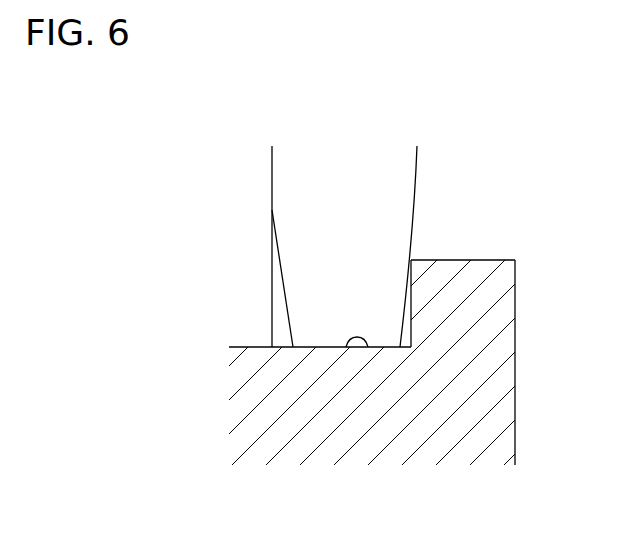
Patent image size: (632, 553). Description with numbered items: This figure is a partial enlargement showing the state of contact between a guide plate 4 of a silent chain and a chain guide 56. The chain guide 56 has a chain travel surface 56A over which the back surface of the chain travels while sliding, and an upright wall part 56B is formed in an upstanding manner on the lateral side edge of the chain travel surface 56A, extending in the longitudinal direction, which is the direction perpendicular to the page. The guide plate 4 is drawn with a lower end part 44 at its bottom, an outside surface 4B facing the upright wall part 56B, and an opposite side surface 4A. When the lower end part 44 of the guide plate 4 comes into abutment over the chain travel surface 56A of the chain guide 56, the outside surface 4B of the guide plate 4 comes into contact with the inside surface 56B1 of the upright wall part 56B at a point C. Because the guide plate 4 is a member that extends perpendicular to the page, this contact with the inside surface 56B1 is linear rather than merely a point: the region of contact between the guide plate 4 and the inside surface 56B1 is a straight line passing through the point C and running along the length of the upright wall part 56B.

The guide plate 4 is at (420, 160).
The tapered side surface of tool 4A is at (283, 313).
The outside surface 4B is at (400, 316).
The point C is at (411, 258).
The lower end part 44 is at (310, 348).
The chain guide 56 is at (518, 395).
The chain travel surface 56A is at (346, 348).
The upright wall part 56B is at (507, 278).
The inside surface 56B1 is at (400, 338).